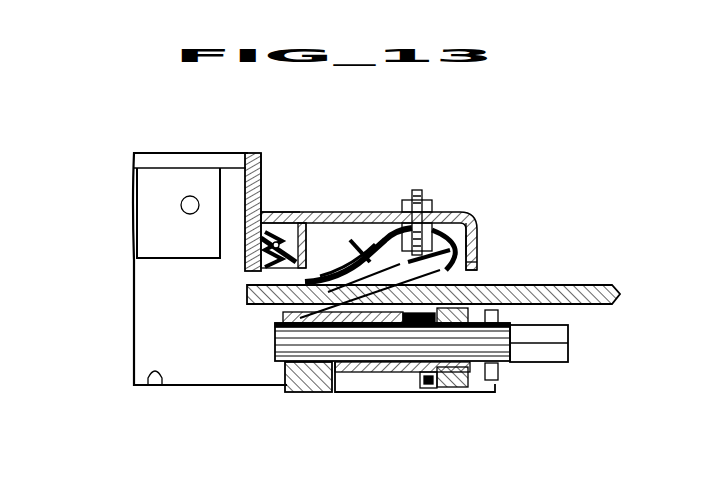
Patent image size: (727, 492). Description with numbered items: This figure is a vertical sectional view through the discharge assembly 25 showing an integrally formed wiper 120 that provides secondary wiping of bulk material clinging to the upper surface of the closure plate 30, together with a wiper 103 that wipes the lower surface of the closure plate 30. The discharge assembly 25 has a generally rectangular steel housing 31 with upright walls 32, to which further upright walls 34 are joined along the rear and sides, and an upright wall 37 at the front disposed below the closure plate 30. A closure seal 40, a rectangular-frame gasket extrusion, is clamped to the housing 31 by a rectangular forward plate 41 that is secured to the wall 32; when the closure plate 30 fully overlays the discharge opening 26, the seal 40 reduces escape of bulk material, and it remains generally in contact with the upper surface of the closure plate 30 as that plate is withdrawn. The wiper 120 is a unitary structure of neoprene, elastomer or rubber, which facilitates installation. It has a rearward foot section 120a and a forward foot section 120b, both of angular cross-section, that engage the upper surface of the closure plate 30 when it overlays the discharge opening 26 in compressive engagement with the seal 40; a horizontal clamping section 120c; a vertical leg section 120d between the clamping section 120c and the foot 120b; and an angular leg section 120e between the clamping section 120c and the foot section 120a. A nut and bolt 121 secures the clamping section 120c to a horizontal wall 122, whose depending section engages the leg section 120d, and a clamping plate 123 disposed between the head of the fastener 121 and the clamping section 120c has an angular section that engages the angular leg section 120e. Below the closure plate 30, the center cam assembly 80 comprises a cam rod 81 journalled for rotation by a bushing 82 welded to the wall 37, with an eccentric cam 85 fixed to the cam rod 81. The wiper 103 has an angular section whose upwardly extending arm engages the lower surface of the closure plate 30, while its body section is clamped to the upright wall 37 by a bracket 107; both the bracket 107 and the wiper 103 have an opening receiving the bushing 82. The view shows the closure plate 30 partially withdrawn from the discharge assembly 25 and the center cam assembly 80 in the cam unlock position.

The discharge assembly 25 is at (131, 192).
The discharge opening 26 is at (150, 386).
The closure plate 30 is at (598, 288).
The housing 31 is at (266, 158).
The upright walls 32 is at (264, 182).
The upright walls 34 is at (492, 382).
The upright wall 37 is at (462, 390).
The closure seal 40 is at (255, 272).
The forward plate 41 is at (252, 160).
The center cam assembly 80 is at (524, 366).
The cam rod 81 is at (338, 392).
The bushing 82 is at (378, 392).
The eccentric cam 85 is at (290, 393).
The wiper 103 is at (440, 393).
The bracket 107 is at (429, 389).
The wiper 120 is at (482, 222).
The rearward foot section 120a is at (318, 292).
The forward foot section 120b is at (300, 320).
The clamping section 120c is at (385, 232).
The vertical leg section 120d is at (480, 242).
The angular leg section 120e is at (352, 238).
The nut and bolt 121 is at (432, 206).
The horizontal wall 122 is at (298, 212).
The clamping plate 123 is at (480, 268).